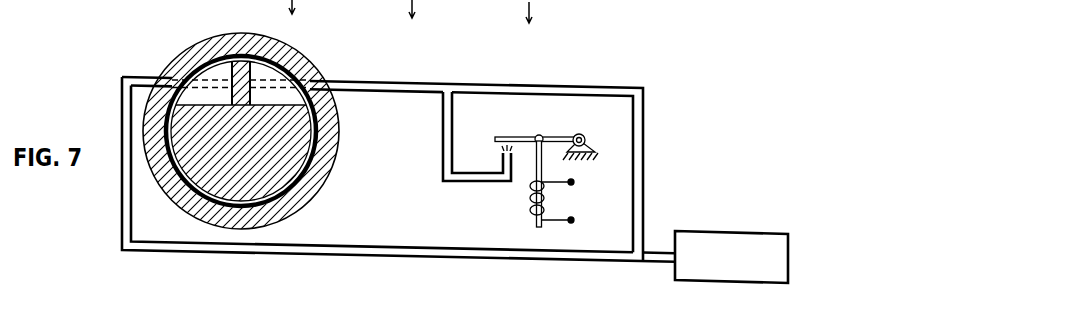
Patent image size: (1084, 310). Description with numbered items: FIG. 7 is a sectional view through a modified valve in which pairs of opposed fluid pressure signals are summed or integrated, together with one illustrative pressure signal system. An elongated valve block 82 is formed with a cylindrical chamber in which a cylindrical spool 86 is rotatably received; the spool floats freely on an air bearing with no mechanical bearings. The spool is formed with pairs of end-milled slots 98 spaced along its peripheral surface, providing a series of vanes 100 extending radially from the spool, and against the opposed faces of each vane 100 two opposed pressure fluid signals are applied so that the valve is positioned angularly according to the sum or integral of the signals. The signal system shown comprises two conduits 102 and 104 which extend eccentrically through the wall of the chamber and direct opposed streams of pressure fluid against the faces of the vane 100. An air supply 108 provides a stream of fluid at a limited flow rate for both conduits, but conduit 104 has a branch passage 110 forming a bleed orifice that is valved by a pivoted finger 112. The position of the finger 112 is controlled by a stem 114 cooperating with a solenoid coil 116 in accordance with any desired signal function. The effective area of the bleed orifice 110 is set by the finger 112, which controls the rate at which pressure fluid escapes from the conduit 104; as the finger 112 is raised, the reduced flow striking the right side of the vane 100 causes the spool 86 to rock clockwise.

The valve block 82 is at (327, 176).
The spool 86 is at (293, 178).
The end-milled slots 98 is at (287, 99).
The vane 100 is at (239, 70).
The conduit 102 is at (141, 72).
The conduit 104 is at (407, 83).
The air supply 108 is at (770, 232).
The branch passage 110 is at (502, 164).
The pivoted finger 112 is at (507, 135).
The stem 114 is at (545, 171).
The solenoid coil 116 is at (529, 200).